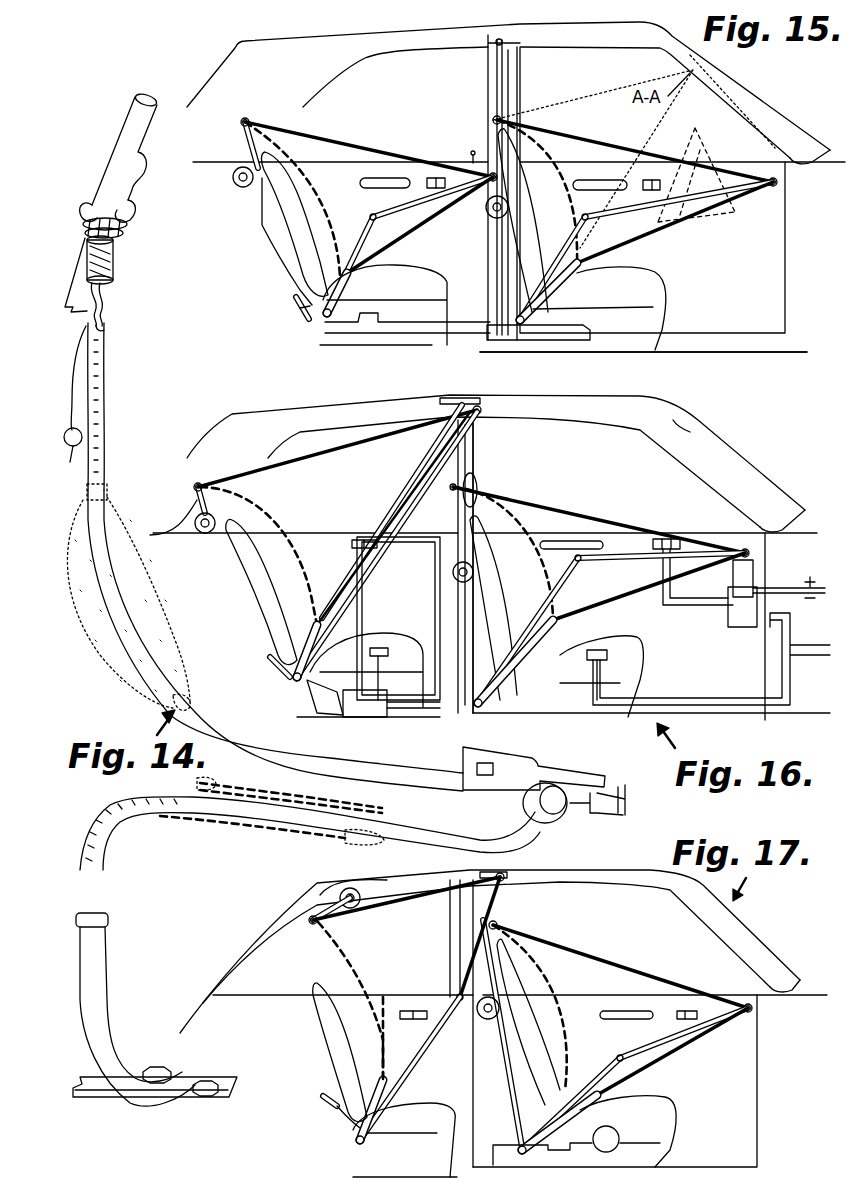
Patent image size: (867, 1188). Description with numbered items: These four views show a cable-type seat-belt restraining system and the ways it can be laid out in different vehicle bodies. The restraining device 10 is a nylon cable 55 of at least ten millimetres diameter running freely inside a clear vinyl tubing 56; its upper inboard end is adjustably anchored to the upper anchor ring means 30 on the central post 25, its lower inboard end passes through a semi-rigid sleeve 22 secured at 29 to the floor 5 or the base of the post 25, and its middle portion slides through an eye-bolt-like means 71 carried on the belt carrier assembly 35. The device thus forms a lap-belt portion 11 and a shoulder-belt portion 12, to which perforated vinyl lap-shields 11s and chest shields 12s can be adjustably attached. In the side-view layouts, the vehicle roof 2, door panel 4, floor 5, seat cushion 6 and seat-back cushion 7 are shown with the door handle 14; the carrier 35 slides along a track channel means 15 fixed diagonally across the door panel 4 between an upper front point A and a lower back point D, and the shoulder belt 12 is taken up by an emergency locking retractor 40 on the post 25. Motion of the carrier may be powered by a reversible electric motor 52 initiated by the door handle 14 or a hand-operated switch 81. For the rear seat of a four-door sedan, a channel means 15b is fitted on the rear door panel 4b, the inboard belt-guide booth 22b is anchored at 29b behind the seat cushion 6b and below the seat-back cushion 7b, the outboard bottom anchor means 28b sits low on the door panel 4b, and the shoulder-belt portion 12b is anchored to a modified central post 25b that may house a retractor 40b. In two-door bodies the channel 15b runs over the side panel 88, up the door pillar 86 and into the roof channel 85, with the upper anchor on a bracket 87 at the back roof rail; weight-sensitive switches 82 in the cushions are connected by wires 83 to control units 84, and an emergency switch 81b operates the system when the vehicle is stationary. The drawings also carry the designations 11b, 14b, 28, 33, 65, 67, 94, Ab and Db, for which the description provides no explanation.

In FIG. 15, the roof 2 is at (636, 26).
In FIG. 16, the roof 2 is at (640, 406).
In FIG. 17, the roof 2 is at (608, 871).
In FIG. 15, the door panel 4 is at (785, 318).
In FIG. 16, the door panel 4 is at (768, 585).
In FIG. 17, the door panel 4 is at (757, 1097).
In FIG. 15, the rear door panel 4b is at (285, 252).
In FIG. 15, the vehicle floor 5 is at (690, 352).
In FIG. 15, the seat cushion 6 is at (670, 292).
In FIG. 16, the seat cushion 6 is at (641, 657).
In FIG. 17, the seat cushion 6 is at (674, 1105).
In FIG. 15, the back seat cushion 6b is at (447, 287).
In FIG. 16, the back seat cushion 6b is at (395, 633).
In FIG. 17, the back seat cushion 6b is at (430, 1103).
In FIG. 15, the seat-back cushion 7 is at (535, 190).
In FIG. 16, the seat-back cushion 7 is at (495, 559).
In FIG. 17, the seat-back cushion 7 is at (527, 1018).
In FIG. 15, the rear seat-back cushion 7b is at (321, 226).
In FIG. 16, the rear seat-back cushion 7b is at (262, 609).
In FIG. 17, the rear seat-back cushion 7b is at (330, 1051).
In FIG. 14, the three-point body restraining device 10 is at (307, 797).
In FIG. 14, the lap-belt portion 11 is at (107, 858).
In FIG. 15, the lap-belt portion 11 is at (601, 250).
In FIG. 16, the lap-belt portion 11 is at (596, 612).
In FIG. 17, the lap-belt portion 11 is at (618, 1093).
In FIG. 15, the belt tube 11b is at (375, 250).
In FIG. 16, the belt tube 11b is at (352, 592).
In FIG. 17, the belt tube 11b is at (405, 1040).
In FIG. 14, the lap-shield 11s is at (203, 820).
In FIG. 14, the shoulder belt portion 12 is at (107, 600).
In FIG. 15, the shoulder belt portion 12 is at (530, 143).
In FIG. 16, the shoulder belt portion 12 is at (490, 508).
In FIG. 17, the shoulder belt portion 12 is at (556, 988).
In FIG. 15, the rear shoulder-belt portion 12b is at (305, 122).
In FIG. 16, the rear shoulder-belt portion 12b is at (258, 498).
In FIG. 17, the rear shoulder-belt portion 12b is at (346, 956).
In FIG. 14, the chest shield 12s is at (125, 675).
In FIG. 15, the door-handle 14 is at (600, 180).
In FIG. 16, the door-handle 14 is at (555, 540).
In FIG. 17, the door-handle 14 is at (603, 1014).
In FIG. 15, the slot 14b is at (386, 188).
In FIG. 15, the track channel means 15 is at (545, 303).
In FIG. 16, the track channel means 15 is at (633, 560).
In FIG. 17, the track channel means 15 is at (624, 1054).
In FIG. 15, the rear belt-guide channel means 15b is at (345, 287).
In FIG. 16, the rear belt-guide channel means 15b is at (385, 580).
In FIG. 17, the rear belt-guide channel means 15b is at (420, 1050).
In FIG. 14, the semi-rigid sleeve 22 is at (107, 918).
In FIG. 15, the semi-rigid sleeve 22 is at (577, 272).
In FIG. 16, the semi-rigid sleeve 22 is at (550, 630).
In FIG. 17, the semi-rigid sleeve 22 is at (600, 1108).
In FIG. 15, the inboard belt-guide booth 22b is at (360, 265).
In FIG. 16, the inboard belt-guide booth 22b is at (315, 632).
In FIG. 17, the inboard belt-guide booth 22b is at (345, 1086).
In FIG. 14, the central post 25 is at (111, 163).
In FIG. 15, the central post 25 is at (488, 92).
In FIG. 16, the central post 25 is at (492, 640).
In FIG. 17, the central post 25 is at (516, 1081).
In FIG. 15, the modified central post 25b is at (245, 152).
In FIG. 16, the modified central post 25b is at (193, 510).
In FIG. 15, the floor member 28 is at (570, 345).
In FIG. 15, the outboard bottom anchor means 28b is at (374, 326).
In FIG. 14, the lower inboard anchor means 29 is at (141, 1074).
In FIG. 16, the lower inboard anchor means 29 is at (280, 672).
In FIG. 15, the rear inboard lower anchor 29b is at (296, 303).
In FIG. 17, the rear inboard lower anchor 29b is at (325, 1106).
In FIG. 14, the upper anchor ring means 30 is at (92, 200).
In FIG. 14, the hook 33 is at (144, 165).
In FIG. 14, the belt carrier assembly 35 is at (470, 803).
In FIG. 15, the emergency locking retractor 40 is at (493, 218).
In FIG. 16, the emergency locking retractor 40 is at (475, 575).
In FIG. 17, the emergency locking retractor 40 is at (492, 1021).
In FIG. 15, the rear emergency locking retractor 40b is at (240, 188).
In FIG. 16, the rear emergency locking retractor 40b is at (200, 535).
In FIG. 17, the rear emergency locking retractor 40b is at (360, 888).
In FIG. 16, the reversible electric motor 52 is at (325, 702).
In FIG. 14, the nylon cable 55 is at (101, 311).
In FIG. 14, the clear vinyl tubing 56 is at (104, 380).
In FIG. 14, the cylinder 65 is at (112, 257).
In FIG. 14, the ball 67 is at (72, 466).
In FIG. 14, the eye bolt like means 71 is at (523, 814).
In FIG. 15, the hand-operated switch 81 is at (657, 181).
In FIG. 16, the hand-operated switch 81 is at (683, 539).
In FIG. 17, the hand-operated switch 81 is at (678, 1014).
In FIG. 15, the emergency switch 81b is at (468, 175).
In FIG. 16, the emergency switch 81b is at (366, 540).
In FIG. 17, the emergency switch 81b is at (425, 1010).
In FIG. 16, the weight sensitive switch 82 is at (389, 653).
In FIG. 16, the wires 83 is at (440, 710).
In FIG. 16, the control unit 84 is at (380, 718).
In FIG. 16, the roof channel 85 is at (450, 398).
In FIG. 17, the roof channel 85 is at (515, 872).
In FIG. 15, the door pillar 86 is at (497, 55).
In FIG. 16, the door pillar 86 is at (417, 463).
In FIG. 17, the door pillar 86 is at (448, 953).
In FIG. 17, the bracket 87 is at (315, 928).
In FIG. 16, the side panel 88 is at (297, 533).
In FIG. 17, the side panel 88 is at (383, 997).
In FIG. 17, the retractor 94 is at (619, 1140).
In FIG. 15, the upper front terminal point A is at (775, 190).
In FIG. 16, the upper front terminal point A is at (755, 556).
In FIG. 17, the upper front terminal point A is at (755, 1009).
In FIG. 15, the pivot point Ab is at (500, 178).
In FIG. 16, the pivot point Ab is at (482, 410).
In FIG. 17, the pivot point Ab is at (504, 885).
In FIG. 15, the lower back terminal point D is at (514, 322).
In FIG. 16, the lower back terminal point D is at (480, 710).
In FIG. 17, the lower back terminal point D is at (513, 1146).
In FIG. 15, the pivot point Db is at (325, 318).
In FIG. 16, the pivot point Db is at (295, 682).
In FIG. 17, the pivot point Db is at (355, 1145).